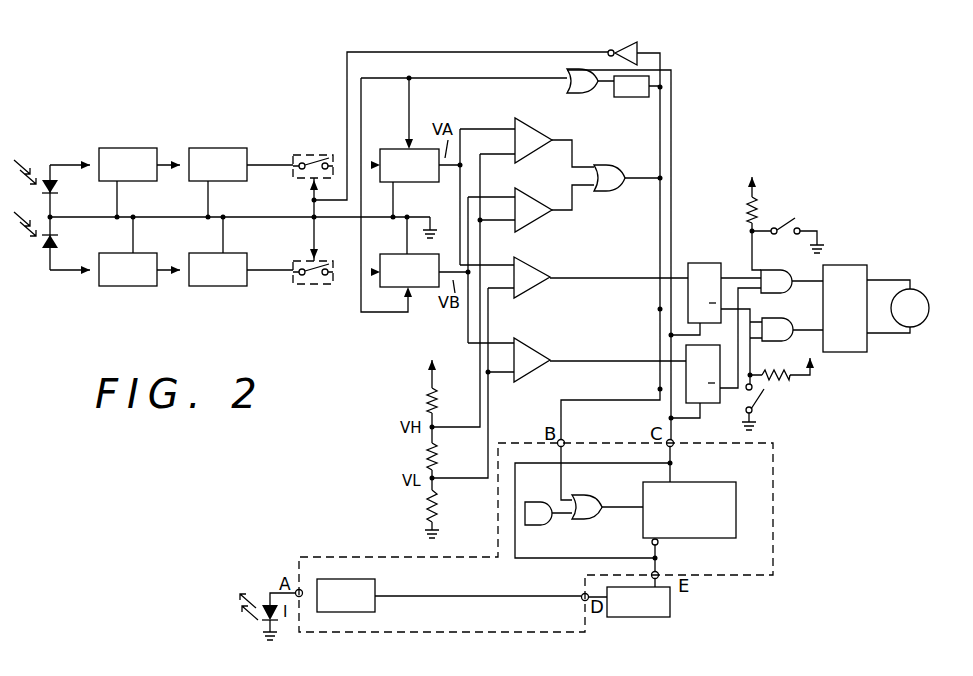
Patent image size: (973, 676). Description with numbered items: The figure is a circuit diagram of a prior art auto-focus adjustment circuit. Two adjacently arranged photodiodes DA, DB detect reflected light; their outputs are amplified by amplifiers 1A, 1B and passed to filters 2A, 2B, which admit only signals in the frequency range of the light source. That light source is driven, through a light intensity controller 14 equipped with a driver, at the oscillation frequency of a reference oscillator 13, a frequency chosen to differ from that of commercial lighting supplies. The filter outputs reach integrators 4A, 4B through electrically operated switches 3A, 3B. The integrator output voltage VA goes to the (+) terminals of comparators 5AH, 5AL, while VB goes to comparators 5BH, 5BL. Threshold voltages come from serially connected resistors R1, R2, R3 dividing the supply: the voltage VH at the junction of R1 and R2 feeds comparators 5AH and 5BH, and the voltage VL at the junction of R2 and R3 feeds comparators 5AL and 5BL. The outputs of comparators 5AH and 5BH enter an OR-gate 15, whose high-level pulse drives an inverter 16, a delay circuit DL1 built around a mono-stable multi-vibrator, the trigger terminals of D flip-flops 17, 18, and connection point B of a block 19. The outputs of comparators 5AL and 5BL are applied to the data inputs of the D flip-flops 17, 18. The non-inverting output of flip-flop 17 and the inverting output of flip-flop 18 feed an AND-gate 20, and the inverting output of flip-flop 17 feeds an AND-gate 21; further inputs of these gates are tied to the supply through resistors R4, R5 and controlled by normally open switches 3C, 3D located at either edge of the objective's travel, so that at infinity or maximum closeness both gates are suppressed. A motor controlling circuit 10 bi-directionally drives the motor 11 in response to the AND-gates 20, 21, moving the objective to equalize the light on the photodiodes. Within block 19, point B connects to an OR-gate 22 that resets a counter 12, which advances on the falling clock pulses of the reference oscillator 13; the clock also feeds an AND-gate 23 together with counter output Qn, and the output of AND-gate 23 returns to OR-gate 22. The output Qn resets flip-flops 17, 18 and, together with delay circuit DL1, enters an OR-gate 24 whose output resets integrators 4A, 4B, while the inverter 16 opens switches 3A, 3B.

The amplifier 1A is at (123, 147).
The filter 2A is at (210, 147).
The switch 3A is at (305, 153).
The integrator 4A is at (387, 148).
The amplifier 1B is at (128, 287).
The filter 2B is at (222, 287).
The switch 3B is at (316, 287).
The integrator 4B is at (423, 290).
The comparator 5AH is at (548, 137).
The comparator 5BH is at (551, 212).
The comparator 5AL is at (547, 272).
The comparator 5BL is at (547, 355).
The OR-gate 15 is at (610, 166).
The inverter 16 is at (625, 42).
The OR-gate 24 is at (567, 89).
The delay circuit DL1 is at (636, 97).
The D flip-flop 17 is at (695, 263).
The D flip-flop 18 is at (708, 403).
The AND-gate 20 is at (765, 270).
The AND-gate 21 is at (782, 323).
The motor controlling circuit 10 is at (848, 265).
The motor 11 is at (923, 288).
The resistor R4 is at (737, 204).
The switch 3C is at (800, 223).
The resistor R5 is at (780, 366).
The switch 3D is at (763, 398).
The block 19 is at (775, 497).
The counter 12 is at (702, 482).
The OR-gate 22 is at (585, 487).
The AND-gate 23 is at (538, 492).
The reference oscillator 13 is at (656, 618).
The light intensity controller 14 is at (377, 589).
The resistor R1 is at (442, 393).
The resistor R2 is at (442, 452).
The resistor R3 is at (442, 504).
The photodiode DA is at (64, 196).
The photodiode DB is at (64, 246).